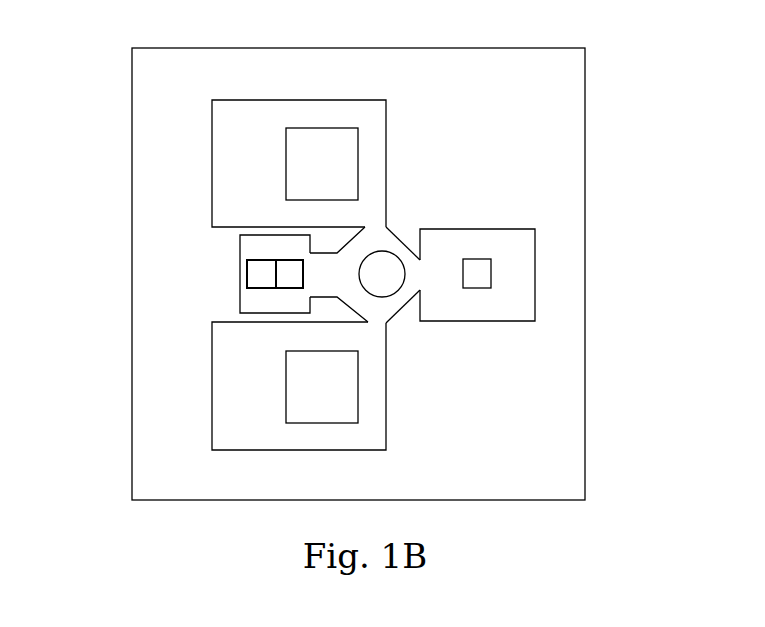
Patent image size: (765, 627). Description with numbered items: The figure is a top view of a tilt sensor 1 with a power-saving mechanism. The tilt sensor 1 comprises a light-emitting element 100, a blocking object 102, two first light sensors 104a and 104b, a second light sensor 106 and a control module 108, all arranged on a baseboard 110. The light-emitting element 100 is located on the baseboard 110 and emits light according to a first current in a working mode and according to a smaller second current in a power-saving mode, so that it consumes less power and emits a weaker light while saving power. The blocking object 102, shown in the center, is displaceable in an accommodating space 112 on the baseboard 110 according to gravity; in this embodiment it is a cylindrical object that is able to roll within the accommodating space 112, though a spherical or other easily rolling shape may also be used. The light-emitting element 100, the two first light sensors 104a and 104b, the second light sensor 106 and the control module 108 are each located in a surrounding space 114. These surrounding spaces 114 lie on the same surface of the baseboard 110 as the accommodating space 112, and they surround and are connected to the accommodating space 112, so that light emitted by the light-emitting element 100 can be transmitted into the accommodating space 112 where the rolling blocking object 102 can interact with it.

The tilt sensor 1 is at (339, 256).
The light-emitting element 100 is at (476, 288).
The blocking object 102 is at (388, 290).
The first light sensor 104a is at (287, 378).
The first light sensor 104b is at (287, 173).
The second light sensor 106 is at (291, 288).
The control module 108 is at (250, 267).
The baseboard 110 is at (568, 77).
The accommodating space 112 is at (384, 243).
The surrounding space 114 is at (377, 130).